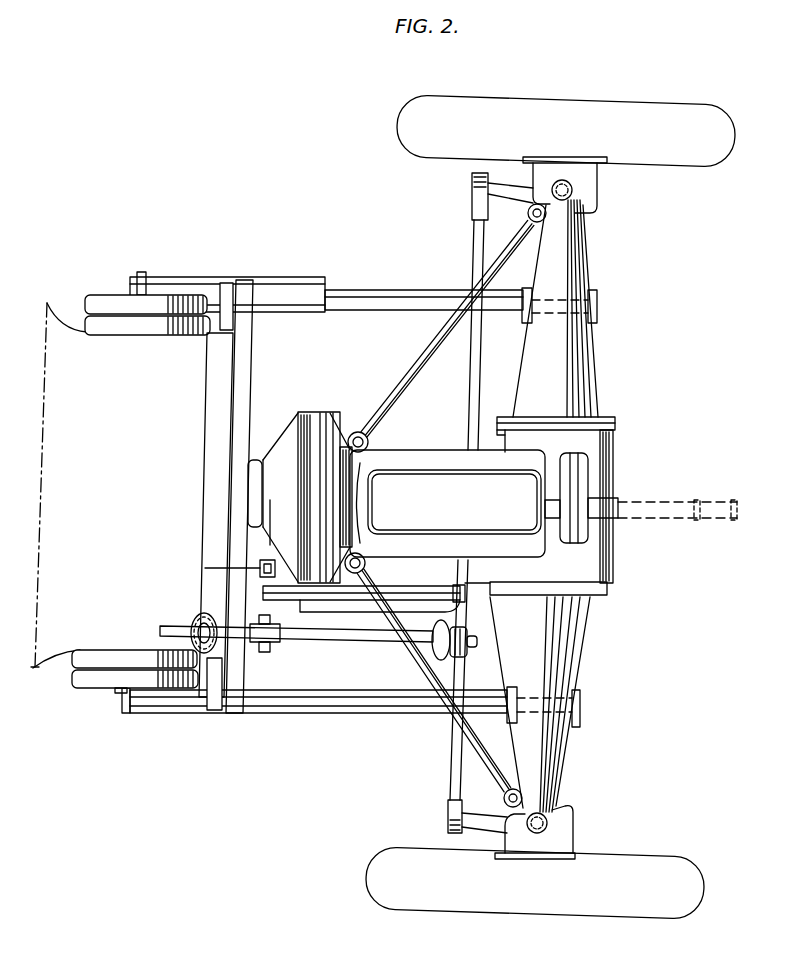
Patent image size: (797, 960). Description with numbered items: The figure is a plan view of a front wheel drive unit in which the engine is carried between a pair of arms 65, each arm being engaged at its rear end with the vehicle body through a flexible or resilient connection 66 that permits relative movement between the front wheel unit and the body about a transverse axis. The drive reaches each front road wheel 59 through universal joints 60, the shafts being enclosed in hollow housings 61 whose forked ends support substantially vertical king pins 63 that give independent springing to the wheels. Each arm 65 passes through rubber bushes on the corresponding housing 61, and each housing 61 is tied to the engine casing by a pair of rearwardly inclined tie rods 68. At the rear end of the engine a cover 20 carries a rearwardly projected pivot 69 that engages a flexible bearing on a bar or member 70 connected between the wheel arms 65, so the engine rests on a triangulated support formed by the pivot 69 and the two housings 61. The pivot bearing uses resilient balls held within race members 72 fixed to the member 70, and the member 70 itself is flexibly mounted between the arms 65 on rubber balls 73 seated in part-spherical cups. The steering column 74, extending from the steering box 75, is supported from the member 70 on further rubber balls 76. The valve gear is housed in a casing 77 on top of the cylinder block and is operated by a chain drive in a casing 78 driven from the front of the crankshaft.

The cover 20 is at (302, 413).
The front road wheel 59 is at (562, 113).
The universal joint 60 is at (548, 170).
The hollow housing 61 is at (590, 340).
The king pin 63 is at (575, 186).
The arm 65 is at (377, 298).
The flexible connection 66 is at (102, 300).
The tie rod 68 is at (433, 343).
The pivot 69 is at (263, 488).
The bar or member 70 is at (235, 413).
The race member 72 is at (255, 488).
The rubber ball 73 is at (240, 317).
The steering column 74 is at (327, 638).
The steering box 75 is at (464, 631).
The rubber ball 76 is at (264, 616).
The casing 77 is at (447, 503).
The casing 78 is at (585, 483).